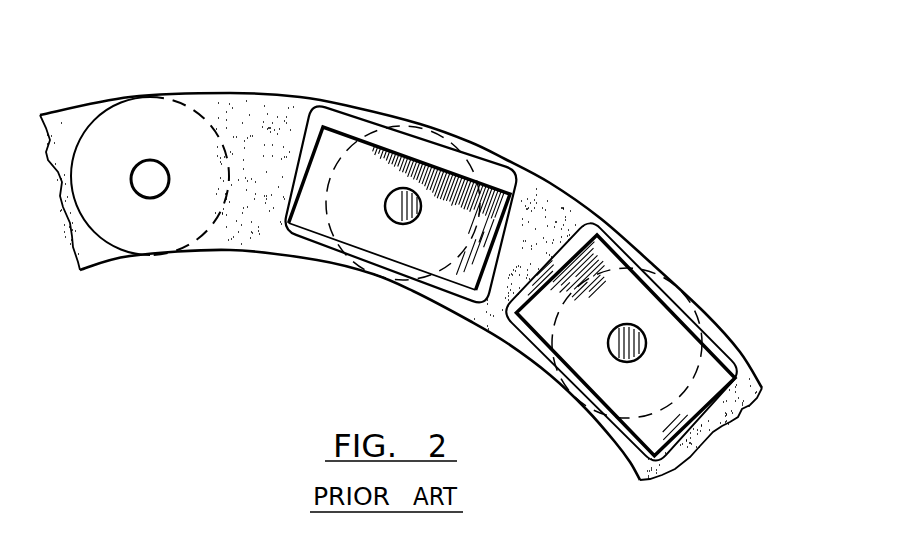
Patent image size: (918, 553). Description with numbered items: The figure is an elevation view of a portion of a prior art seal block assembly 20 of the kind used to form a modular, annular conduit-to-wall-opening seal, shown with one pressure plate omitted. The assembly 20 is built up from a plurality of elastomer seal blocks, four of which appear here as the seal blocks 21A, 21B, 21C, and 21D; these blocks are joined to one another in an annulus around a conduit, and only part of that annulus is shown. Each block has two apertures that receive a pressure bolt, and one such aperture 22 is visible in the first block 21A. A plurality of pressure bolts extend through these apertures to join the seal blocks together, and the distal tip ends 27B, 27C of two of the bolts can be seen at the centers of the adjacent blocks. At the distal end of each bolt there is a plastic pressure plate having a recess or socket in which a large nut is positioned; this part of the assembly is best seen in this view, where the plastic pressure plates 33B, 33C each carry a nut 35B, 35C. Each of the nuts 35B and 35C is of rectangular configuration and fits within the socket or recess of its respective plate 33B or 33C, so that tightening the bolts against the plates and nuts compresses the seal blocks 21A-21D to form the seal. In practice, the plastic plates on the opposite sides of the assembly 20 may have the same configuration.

The seal block assembly 20 is at (627, 193).
The elastomer seal block 21A is at (88, 252).
The elastomer seal block 21B is at (247, 233).
The elastomer seal block 21C is at (477, 313).
The elastomer seal block 21D is at (628, 464).
The aperture 22 is at (144, 163).
The distal tip end of bolt 27B is at (396, 213).
The distal tip end of bolt 27C is at (617, 357).
The plastic pressure plate 33B is at (487, 173).
The plastic pressure plate 33C is at (627, 258).
The nut 35B is at (330, 147).
The nut 35C is at (717, 378).